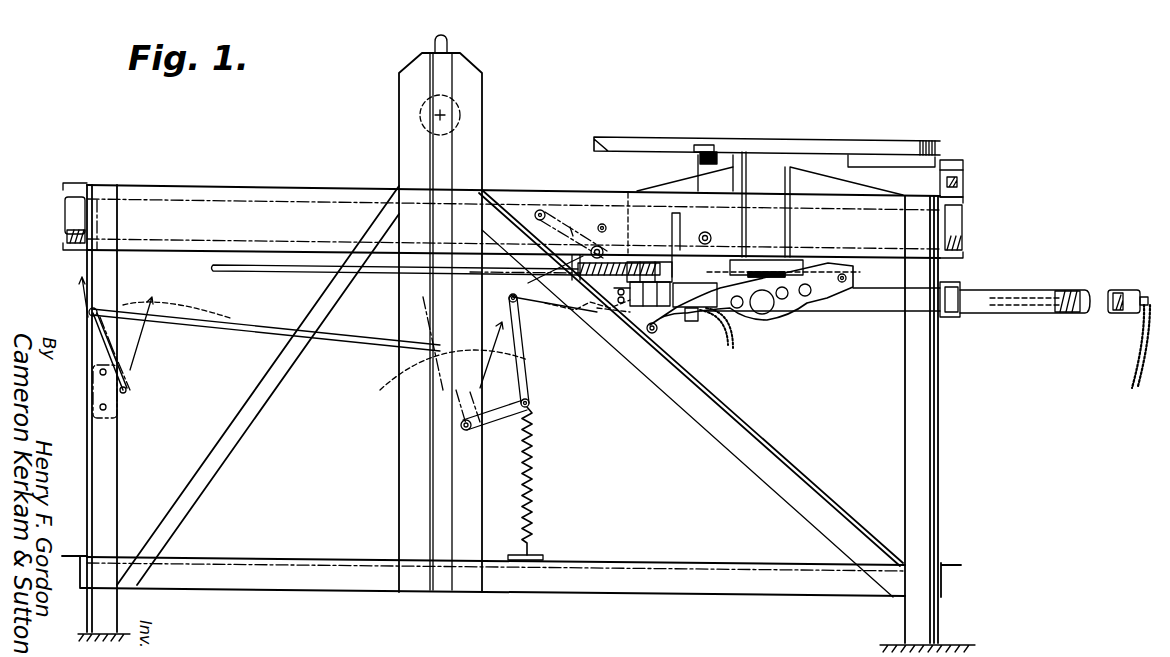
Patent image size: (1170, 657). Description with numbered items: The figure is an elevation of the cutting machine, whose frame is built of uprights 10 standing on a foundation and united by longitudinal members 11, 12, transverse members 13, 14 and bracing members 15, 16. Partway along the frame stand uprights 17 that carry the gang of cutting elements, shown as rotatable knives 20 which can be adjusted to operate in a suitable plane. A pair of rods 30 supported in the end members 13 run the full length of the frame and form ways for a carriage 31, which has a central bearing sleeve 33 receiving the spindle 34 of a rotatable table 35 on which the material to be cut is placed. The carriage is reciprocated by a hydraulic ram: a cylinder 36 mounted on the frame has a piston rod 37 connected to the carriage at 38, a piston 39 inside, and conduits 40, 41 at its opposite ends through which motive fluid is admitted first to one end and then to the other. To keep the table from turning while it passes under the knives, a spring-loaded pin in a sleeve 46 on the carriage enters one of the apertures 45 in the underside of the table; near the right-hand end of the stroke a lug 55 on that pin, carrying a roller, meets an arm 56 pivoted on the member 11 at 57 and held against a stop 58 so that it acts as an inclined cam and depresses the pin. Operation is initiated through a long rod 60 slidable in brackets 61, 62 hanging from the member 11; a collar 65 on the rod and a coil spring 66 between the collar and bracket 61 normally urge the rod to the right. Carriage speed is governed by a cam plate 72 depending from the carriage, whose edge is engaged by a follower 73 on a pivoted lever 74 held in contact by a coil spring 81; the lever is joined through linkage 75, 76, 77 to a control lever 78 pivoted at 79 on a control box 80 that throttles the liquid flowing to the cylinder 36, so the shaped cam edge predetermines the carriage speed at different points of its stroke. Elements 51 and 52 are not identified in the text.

The uprights 10 is at (100, 500).
The longitudinal member 11 is at (227, 205).
The longitudinal member 12 is at (268, 570).
The transverse member 13 is at (86, 231).
The transverse member 14 is at (943, 563).
The bracing member 15 is at (691, 393).
The bracing member 16 is at (235, 455).
The uprights 17 is at (465, 180).
The rotatable knives 20 is at (456, 126).
The rods 30 is at (77, 212).
The carriage 31 is at (717, 183).
The bearing sleeve 33 is at (790, 172).
The spindle 34 is at (755, 180).
The rotatable table 35 is at (607, 142).
The hydraulic cylinder 36 is at (887, 298).
The piston rod 37 is at (628, 312).
The connection 38 is at (628, 282).
The piston 39 is at (1067, 315).
The conduit 40 is at (731, 352).
The conduit 41 is at (1142, 353).
The apertures 45 is at (700, 152).
The sleeve 46 is at (680, 195).
The end bracket 51 is at (948, 162).
The plate bar 52 is at (843, 160).
The lug 55 is at (753, 203).
The arm 56 is at (573, 230).
The pivot 57 is at (542, 211).
The stop 58 is at (606, 226).
The rod 60 is at (396, 279).
The bracket 61 is at (541, 275).
The bracket 62 is at (660, 308).
The collar 65 is at (620, 259).
The coil spring 66 is at (604, 251).
The cam plate 72 is at (772, 312).
The follower 73 is at (658, 328).
The pivoted lever 74 is at (540, 306).
The linkage 75 is at (517, 391).
The linkage 76 is at (437, 355).
The linkage 77 is at (218, 318).
The control lever 78 is at (122, 365).
The pivot 79 is at (128, 390).
The control box 80 is at (108, 410).
The coil spring 81 is at (530, 492).